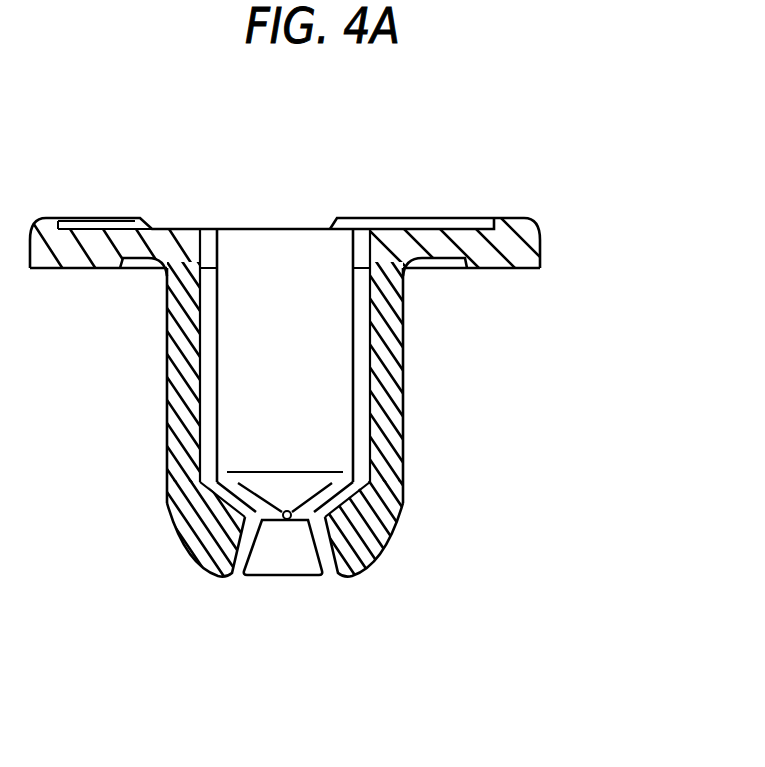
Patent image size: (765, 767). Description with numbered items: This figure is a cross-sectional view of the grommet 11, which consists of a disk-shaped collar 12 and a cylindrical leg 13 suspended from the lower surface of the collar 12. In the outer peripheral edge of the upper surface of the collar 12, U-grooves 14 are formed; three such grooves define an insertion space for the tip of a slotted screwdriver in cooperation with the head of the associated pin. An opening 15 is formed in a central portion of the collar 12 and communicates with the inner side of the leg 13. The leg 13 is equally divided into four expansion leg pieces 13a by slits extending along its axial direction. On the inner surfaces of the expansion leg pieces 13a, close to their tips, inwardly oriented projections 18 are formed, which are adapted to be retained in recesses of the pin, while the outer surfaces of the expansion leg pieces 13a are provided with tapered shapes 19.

The grommet 11 is at (573, 159).
The collar 12 is at (111, 232).
The leg 13 is at (130, 342).
The expansion leg pieces 13a is at (167, 400).
The U-grooves 14 is at (493, 229).
The opening 15 is at (269, 241).
The inwardly oriented projections 18 is at (245, 518).
The tapered shapes 19 is at (183, 540).